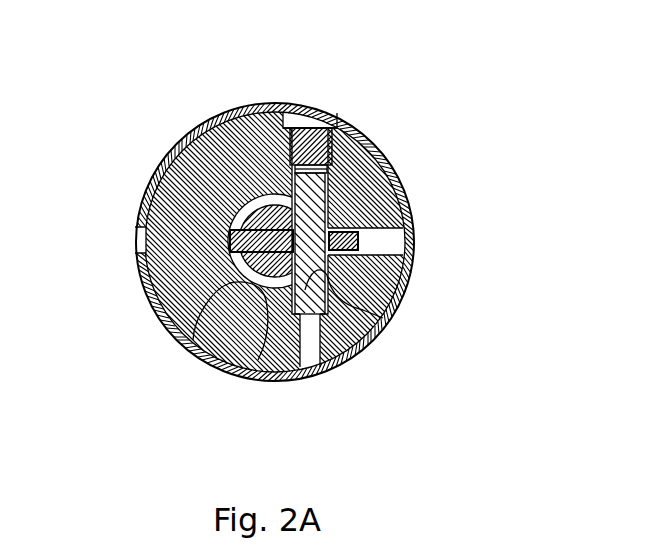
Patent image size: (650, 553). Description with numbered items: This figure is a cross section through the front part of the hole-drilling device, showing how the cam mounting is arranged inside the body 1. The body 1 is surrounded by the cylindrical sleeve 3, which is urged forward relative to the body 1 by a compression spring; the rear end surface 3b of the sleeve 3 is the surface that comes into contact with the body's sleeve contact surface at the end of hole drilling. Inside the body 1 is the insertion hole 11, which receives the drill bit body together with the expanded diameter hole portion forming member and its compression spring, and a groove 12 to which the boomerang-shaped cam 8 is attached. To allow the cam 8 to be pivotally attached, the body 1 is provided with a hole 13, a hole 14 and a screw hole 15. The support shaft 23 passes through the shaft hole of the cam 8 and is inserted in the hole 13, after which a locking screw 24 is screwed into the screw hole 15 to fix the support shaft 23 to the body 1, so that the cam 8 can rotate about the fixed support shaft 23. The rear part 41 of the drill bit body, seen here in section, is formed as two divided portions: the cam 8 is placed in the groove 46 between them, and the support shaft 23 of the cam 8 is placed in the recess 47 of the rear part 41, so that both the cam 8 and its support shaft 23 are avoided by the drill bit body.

The body 1 is at (158, 158).
The sleeve 3 is at (210, 118).
The rear end surface 3b is at (140, 243).
The cam 8 is at (403, 254).
The insertion hole 11 is at (193, 340).
The groove 12 is at (360, 240).
The hole 13 is at (383, 318).
The hole 14 is at (310, 343).
The screw hole 15 is at (308, 207).
The support shaft 23 is at (327, 195).
The locking screw 24 is at (357, 120).
The rear part 41 is at (252, 207).
The groove 46 is at (258, 360).
The recess 47 is at (267, 192).